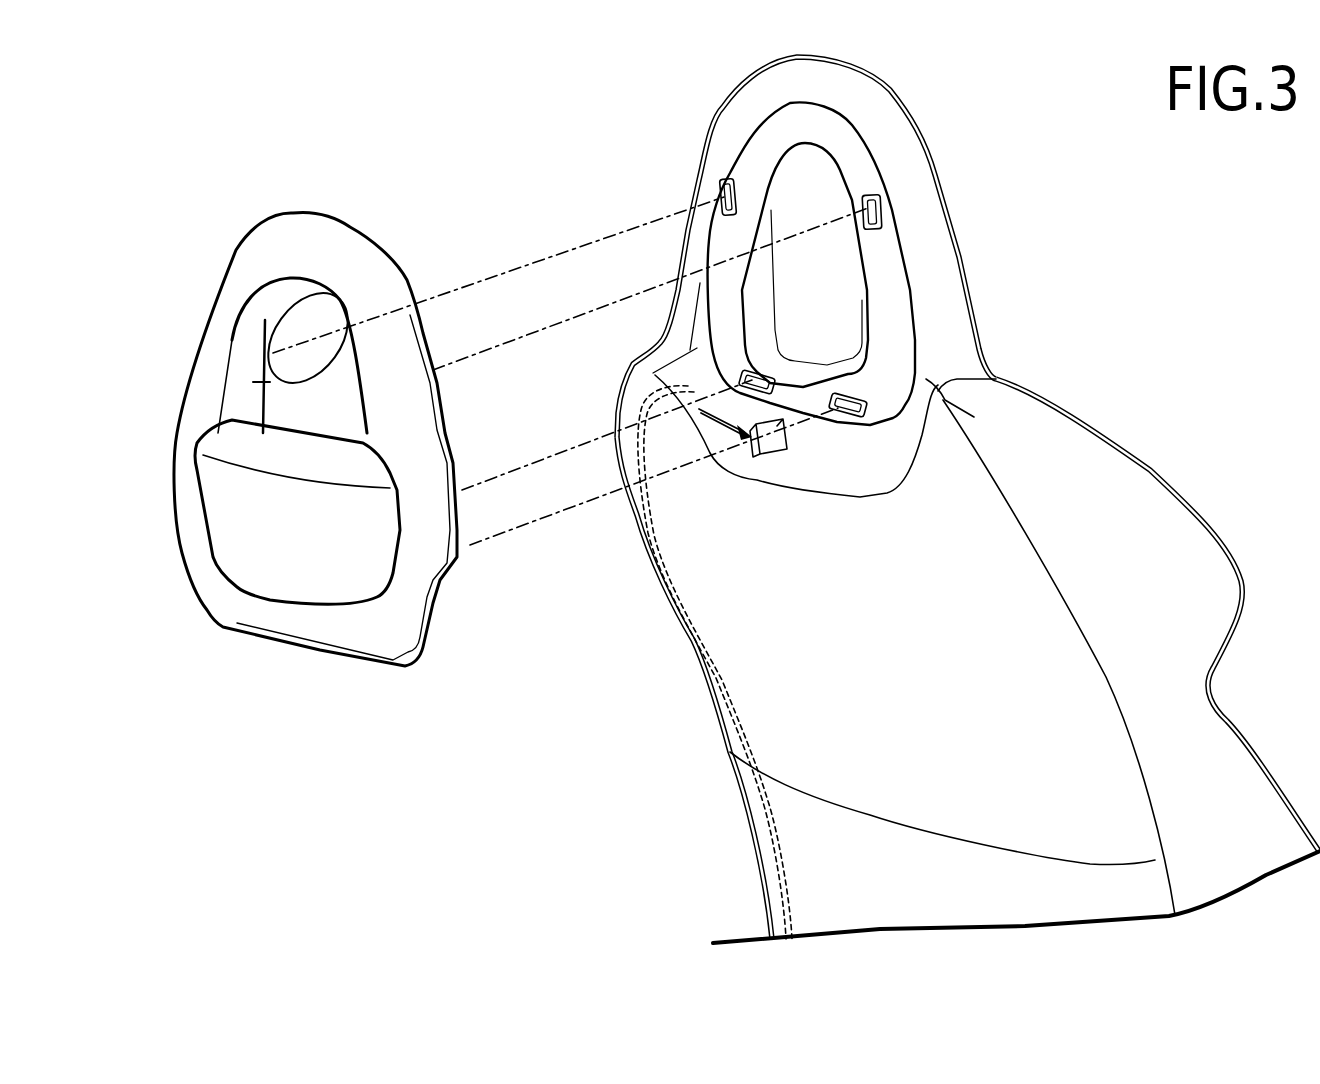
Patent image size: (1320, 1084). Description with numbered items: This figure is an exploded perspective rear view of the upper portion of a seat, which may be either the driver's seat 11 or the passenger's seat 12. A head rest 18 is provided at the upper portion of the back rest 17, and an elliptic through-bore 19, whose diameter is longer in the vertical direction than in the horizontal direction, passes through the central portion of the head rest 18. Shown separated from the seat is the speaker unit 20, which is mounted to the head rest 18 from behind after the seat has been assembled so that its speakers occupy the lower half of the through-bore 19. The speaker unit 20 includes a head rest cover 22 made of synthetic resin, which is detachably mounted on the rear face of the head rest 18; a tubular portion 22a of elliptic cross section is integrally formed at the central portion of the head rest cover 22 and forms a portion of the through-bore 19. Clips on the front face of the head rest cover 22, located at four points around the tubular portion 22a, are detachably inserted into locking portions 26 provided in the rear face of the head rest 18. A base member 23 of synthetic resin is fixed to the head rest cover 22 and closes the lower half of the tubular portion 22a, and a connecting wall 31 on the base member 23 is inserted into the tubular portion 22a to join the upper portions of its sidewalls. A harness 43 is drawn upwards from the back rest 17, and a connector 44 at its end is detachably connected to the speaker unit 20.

The driver's seat 11 is at (987, 646).
The passenger's seat 12 is at (1142, 438).
The back rest 17 is at (672, 610).
The head rest 18 is at (885, 92).
The through-bore 19 is at (773, 153).
The speaker unit 20 is at (327, 442).
The head rest cover 22 is at (213, 343).
The tubular portion 22a is at (343, 310).
The base member 23 is at (318, 573).
The locking portions 26 is at (722, 187).
The connecting wall 31 is at (327, 453).
The harness 43 is at (745, 794).
The connector 44 is at (772, 455).